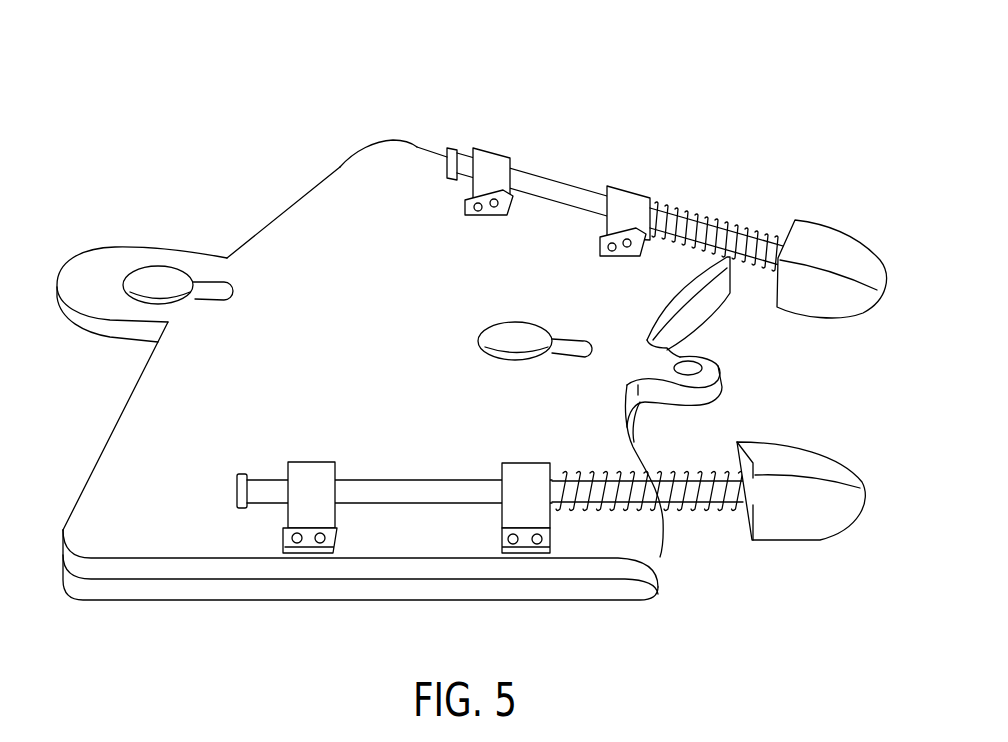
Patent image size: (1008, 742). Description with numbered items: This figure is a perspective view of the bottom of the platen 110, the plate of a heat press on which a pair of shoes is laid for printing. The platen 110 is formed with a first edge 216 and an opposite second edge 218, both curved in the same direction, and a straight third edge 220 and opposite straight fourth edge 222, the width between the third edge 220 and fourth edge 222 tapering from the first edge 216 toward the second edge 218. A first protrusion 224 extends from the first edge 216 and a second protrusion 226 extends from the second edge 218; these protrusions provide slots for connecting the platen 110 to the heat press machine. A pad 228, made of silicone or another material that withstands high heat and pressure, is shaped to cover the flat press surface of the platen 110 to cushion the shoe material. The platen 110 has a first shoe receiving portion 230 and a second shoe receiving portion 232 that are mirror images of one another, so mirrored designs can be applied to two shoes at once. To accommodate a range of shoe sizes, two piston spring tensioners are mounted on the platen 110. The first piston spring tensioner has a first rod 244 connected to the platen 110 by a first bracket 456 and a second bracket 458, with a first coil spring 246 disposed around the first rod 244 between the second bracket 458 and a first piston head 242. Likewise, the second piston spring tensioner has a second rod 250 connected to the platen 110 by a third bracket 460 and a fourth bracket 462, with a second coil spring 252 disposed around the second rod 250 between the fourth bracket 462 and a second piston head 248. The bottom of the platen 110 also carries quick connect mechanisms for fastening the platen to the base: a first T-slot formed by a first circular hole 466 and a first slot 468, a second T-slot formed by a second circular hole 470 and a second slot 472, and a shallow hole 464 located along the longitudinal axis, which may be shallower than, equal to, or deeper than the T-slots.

The platen 110 is at (329, 96).
The first edge 216 is at (296, 200).
The second edge 218 is at (637, 448).
The third edge 220 is at (420, 142).
The fourth edge 222 is at (253, 560).
The first protrusion 224 is at (90, 265).
The second protrusion 226 is at (670, 358).
The pad 228 is at (120, 592).
The first shoe receiving portion 230 is at (377, 180).
The second shoe receiving portion 232 is at (100, 510).
The first piston head 242 is at (827, 243).
The first rod 244 is at (560, 192).
The first coil spring 246 is at (715, 240).
The second piston head 248 is at (805, 520).
The second rod 250 is at (393, 490).
The second coil spring 252 is at (710, 505).
The first bracket 456 is at (497, 167).
The second bracket 458 is at (630, 200).
The third bracket 460 is at (312, 472).
The fourth bracket 462 is at (527, 473).
The shallow hole 464 is at (695, 370).
The first circular hole 466 is at (158, 290).
The first slot 468 is at (208, 290).
The second circular hole 470 is at (513, 350).
The second slot 472 is at (568, 347).